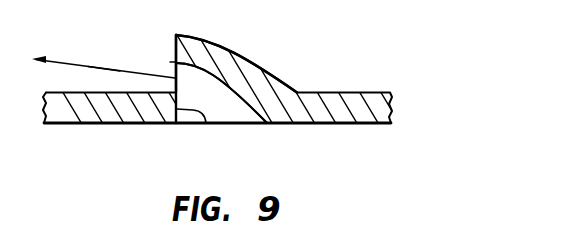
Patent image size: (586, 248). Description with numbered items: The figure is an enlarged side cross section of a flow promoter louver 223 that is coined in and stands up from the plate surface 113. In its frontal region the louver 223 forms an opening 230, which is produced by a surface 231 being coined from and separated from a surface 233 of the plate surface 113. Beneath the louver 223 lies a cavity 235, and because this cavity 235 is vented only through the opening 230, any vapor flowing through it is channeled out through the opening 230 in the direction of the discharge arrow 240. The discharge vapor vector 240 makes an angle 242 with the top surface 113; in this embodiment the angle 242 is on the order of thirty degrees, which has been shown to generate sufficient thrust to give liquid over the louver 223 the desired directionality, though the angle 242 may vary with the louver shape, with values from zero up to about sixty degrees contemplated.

The plate surface 113 is at (353, 92).
The louver 223 is at (267, 76).
The opening 230 is at (184, 64).
The surface 231 is at (175, 44).
The surface 233 is at (206, 126).
The cavity 235 is at (228, 102).
The discharge arrow 240 is at (87, 69).
The angle 242 is at (86, 69).